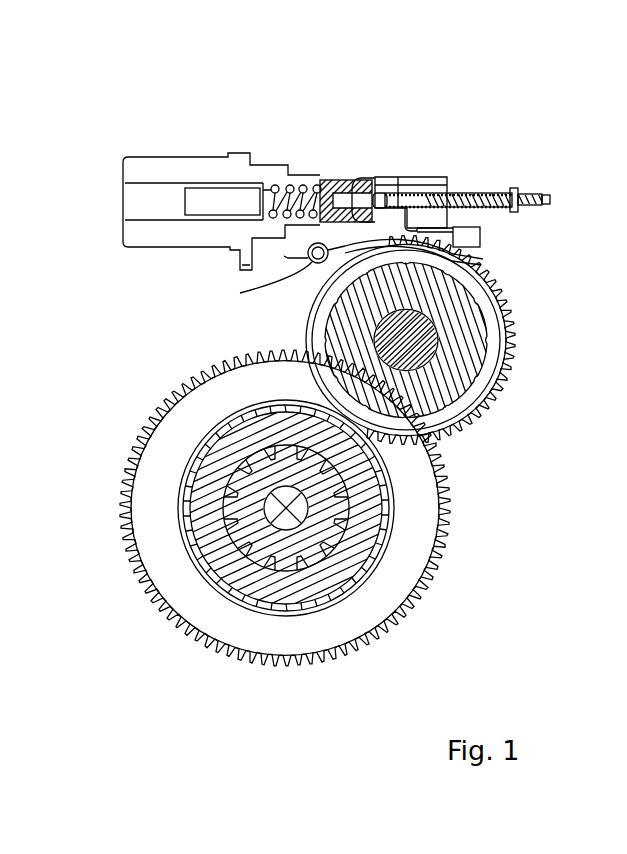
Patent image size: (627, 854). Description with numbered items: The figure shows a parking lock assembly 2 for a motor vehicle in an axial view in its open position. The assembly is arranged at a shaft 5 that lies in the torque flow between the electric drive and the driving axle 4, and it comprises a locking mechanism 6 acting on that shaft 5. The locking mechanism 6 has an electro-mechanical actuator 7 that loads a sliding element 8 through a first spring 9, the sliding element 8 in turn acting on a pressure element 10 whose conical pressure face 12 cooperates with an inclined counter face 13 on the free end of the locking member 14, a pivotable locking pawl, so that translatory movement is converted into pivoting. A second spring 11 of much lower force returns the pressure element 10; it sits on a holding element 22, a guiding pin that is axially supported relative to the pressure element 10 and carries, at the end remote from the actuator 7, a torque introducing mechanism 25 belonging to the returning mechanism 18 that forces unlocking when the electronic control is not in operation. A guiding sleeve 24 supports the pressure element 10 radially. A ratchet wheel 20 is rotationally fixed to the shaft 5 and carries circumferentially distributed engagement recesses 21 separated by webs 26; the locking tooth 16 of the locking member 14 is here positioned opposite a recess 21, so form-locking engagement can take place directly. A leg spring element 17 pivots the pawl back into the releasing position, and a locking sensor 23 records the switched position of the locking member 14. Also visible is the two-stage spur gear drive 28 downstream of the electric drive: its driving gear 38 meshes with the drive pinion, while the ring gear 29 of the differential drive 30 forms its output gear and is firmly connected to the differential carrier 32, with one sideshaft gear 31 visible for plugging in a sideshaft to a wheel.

The parking lock assembly 2 is at (103, 120).
The driving axle 4 is at (128, 383).
The shaft 5 is at (438, 348).
The locking mechanism 6 is at (283, 130).
The actuator 7 is at (177, 157).
The sliding element 8 is at (330, 180).
The first spring 9 is at (303, 185).
The pressure element 10 is at (369, 178).
The second spring 11 is at (490, 193).
The pressure face 12 is at (398, 177).
The counter face 13 is at (357, 180).
The locking member 14 is at (383, 251).
The locking tooth 16 is at (480, 235).
The spring element 17 is at (240, 293).
The returning mechanism 18 is at (533, 173).
The ratchet wheel 20 is at (498, 340).
The engagement recesses 21 is at (483, 312).
The holding element 22 is at (458, 193).
The locking sensor 23 is at (470, 228).
The guiding sleeve 24 is at (423, 177).
The torque introducing mechanism 25 is at (551, 200).
The web 26 is at (480, 396).
The spur gear drive 28 is at (500, 448).
The ring gear 29 is at (435, 560).
The differential drive 30 is at (170, 509).
The sideshaft gear 31 is at (238, 548).
The differential carrier 32 is at (260, 582).
The driving gear 38 is at (288, 331).